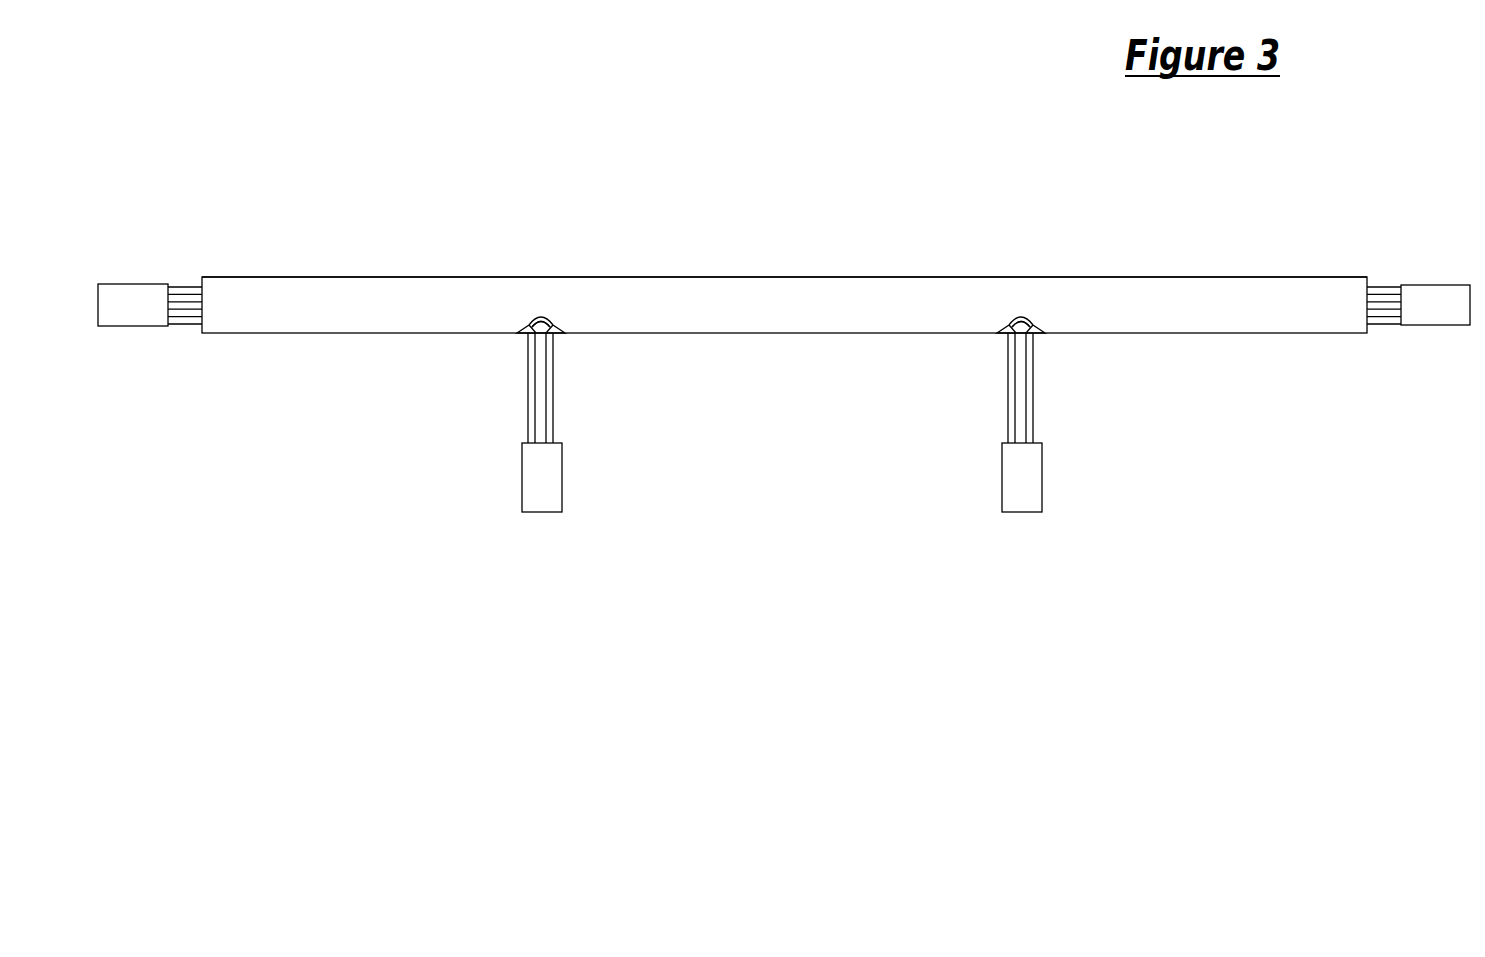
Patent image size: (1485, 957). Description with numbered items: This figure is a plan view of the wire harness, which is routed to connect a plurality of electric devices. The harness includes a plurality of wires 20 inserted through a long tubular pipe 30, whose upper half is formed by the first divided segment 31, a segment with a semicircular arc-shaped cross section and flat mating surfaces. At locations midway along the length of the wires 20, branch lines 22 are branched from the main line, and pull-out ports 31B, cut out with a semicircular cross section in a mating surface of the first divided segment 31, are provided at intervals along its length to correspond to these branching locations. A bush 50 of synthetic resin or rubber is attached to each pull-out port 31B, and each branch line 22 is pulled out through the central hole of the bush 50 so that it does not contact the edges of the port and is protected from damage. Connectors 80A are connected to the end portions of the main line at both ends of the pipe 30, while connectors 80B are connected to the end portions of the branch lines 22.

The wire 20 is at (186, 290).
The branch line 22 is at (545, 398).
The pipe 30 is at (802, 277).
The first divided segment 31 is at (733, 286).
The pull-out port 31B is at (544, 328).
The bush 50 is at (521, 337).
The connector 80A is at (130, 283).
The connector 80B is at (538, 513).